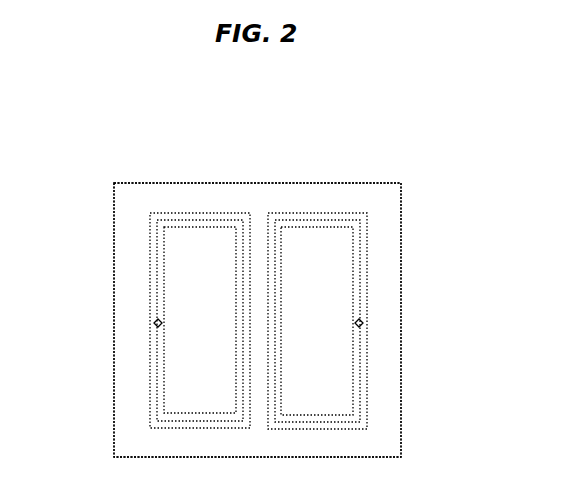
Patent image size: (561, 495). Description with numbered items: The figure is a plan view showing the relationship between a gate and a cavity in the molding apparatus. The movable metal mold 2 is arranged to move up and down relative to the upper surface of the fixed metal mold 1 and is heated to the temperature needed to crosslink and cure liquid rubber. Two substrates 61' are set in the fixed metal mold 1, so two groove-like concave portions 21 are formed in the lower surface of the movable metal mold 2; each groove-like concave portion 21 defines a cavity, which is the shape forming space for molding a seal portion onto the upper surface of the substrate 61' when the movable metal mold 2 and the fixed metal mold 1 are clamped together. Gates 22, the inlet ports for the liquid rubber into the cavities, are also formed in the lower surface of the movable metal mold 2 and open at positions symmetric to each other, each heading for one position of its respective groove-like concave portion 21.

The fixed metal mold 1 is at (181, 183).
The movable metal mold 2 is at (257, 320).
The substrate 61' is at (253, 321).
The gate 22 is at (154, 323).
The groove-like concave portion 21 is at (164, 382).